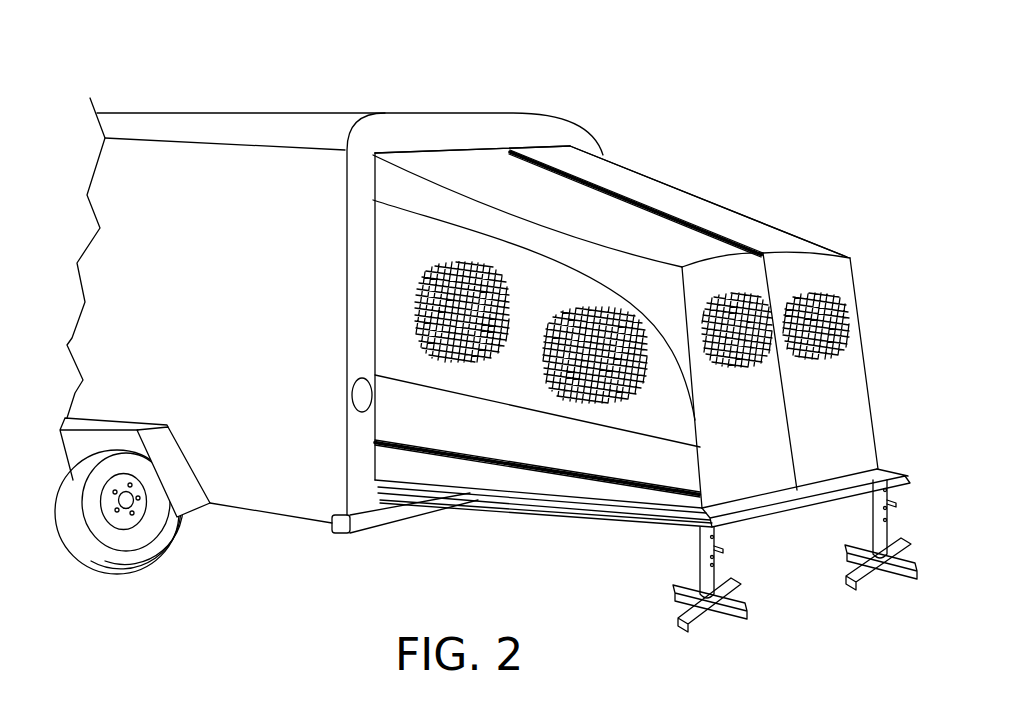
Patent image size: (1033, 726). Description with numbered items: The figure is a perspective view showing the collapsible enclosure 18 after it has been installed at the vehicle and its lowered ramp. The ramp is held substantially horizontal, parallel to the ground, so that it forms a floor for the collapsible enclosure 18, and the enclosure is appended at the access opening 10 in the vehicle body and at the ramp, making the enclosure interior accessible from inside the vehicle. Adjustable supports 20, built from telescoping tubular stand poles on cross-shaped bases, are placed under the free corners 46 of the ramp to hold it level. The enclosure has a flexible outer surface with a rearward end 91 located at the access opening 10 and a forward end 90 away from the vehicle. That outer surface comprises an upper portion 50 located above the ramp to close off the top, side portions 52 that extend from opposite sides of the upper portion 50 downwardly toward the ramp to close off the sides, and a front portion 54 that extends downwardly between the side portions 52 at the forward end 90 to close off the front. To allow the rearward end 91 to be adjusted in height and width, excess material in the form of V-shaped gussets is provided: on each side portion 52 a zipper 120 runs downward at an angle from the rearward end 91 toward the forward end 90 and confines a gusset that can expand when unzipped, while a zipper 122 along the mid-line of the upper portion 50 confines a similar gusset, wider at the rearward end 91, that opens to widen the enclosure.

The access opening 10 is at (342, 220).
The collapsible enclosure 18 is at (684, 185).
The supports 20 is at (706, 626).
The free corners 46 is at (880, 470).
The upper portion 50 is at (522, 183).
The side portions 52 is at (662, 390).
The front portion 54 is at (825, 372).
The forward end 90 is at (785, 251).
The rearward end 91 is at (473, 146).
The zipper 120 is at (460, 455).
The zipper 122 is at (612, 180).